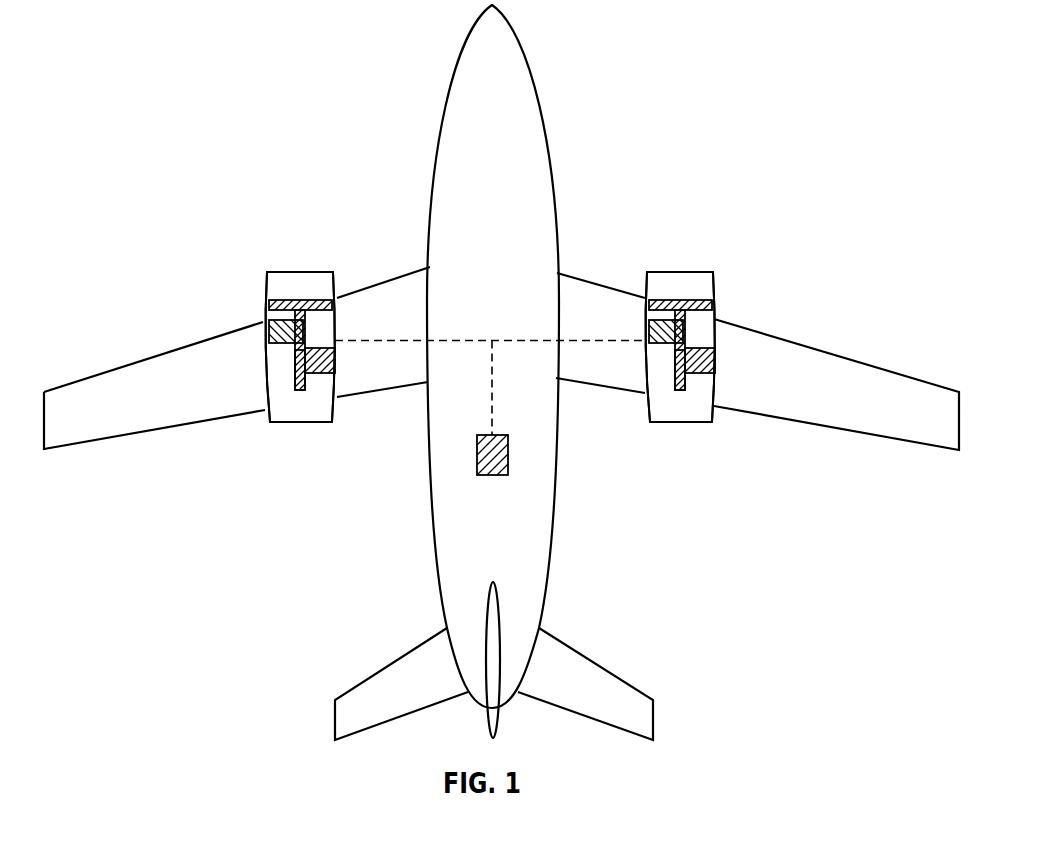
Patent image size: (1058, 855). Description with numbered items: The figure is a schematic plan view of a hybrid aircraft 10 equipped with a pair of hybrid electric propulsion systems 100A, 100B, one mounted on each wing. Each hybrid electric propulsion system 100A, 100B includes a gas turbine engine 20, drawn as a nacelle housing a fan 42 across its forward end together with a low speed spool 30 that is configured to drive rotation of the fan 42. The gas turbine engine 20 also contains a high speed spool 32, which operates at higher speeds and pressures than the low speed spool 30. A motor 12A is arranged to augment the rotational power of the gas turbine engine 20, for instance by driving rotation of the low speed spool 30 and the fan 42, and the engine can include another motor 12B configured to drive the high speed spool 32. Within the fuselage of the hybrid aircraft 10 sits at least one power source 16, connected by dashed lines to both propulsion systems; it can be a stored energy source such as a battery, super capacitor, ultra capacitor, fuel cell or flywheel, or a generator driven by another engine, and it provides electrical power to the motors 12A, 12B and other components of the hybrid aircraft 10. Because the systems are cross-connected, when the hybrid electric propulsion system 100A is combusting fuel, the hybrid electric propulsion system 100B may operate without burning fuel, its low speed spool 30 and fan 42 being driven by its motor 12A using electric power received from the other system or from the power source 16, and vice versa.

The hybrid aircraft 10 is at (388, 116).
The motor 12A is at (269, 329).
The motor 12B is at (337, 362).
The power source 16 is at (492, 475).
The gas turbine engine 20 is at (308, 413).
The low speed spool 30 is at (305, 338).
The high speed spool 32 is at (295, 365).
The fan 42 is at (300, 300).
The hybrid electric propulsion system 100A is at (246, 280).
The hybrid electric propulsion system 100B is at (736, 277).